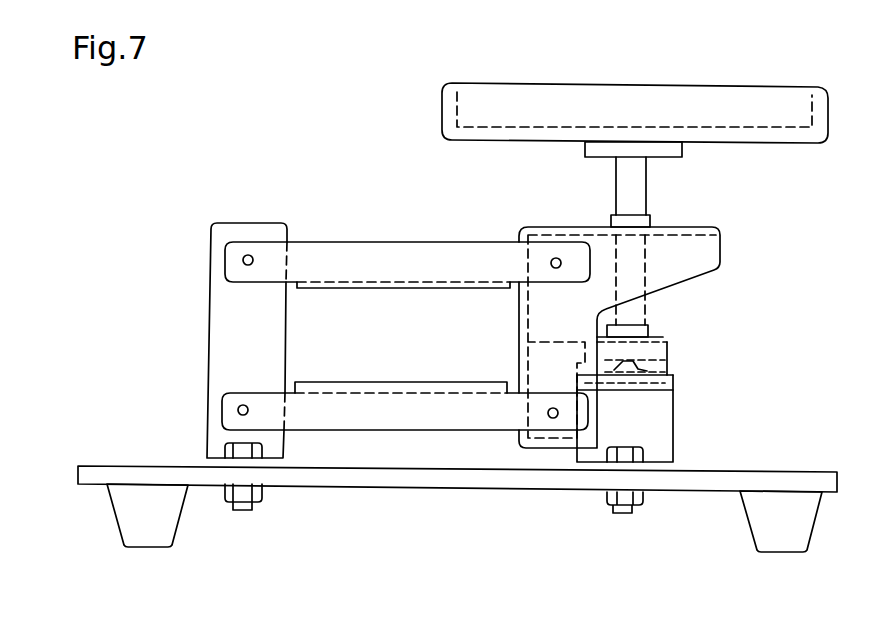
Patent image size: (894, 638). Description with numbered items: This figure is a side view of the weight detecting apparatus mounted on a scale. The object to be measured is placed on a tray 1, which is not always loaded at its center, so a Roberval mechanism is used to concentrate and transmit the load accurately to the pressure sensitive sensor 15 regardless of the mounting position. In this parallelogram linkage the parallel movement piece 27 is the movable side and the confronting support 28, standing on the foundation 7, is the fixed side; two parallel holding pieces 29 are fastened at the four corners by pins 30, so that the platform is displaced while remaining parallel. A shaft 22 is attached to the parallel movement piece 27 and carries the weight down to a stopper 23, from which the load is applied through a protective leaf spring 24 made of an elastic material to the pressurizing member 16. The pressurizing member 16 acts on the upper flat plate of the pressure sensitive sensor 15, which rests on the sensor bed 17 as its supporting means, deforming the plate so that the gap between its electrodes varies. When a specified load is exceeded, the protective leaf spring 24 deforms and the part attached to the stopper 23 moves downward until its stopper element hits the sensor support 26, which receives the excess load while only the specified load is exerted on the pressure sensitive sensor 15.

The tray 1 is at (822, 110).
The foundation 7 is at (480, 480).
The pressure sensitive sensor 15 is at (672, 379).
The pressurizing member 16 is at (668, 365).
The sensor bed 17 is at (673, 393).
The shaft 22 is at (635, 308).
The stopper 23 is at (666, 339).
The protective leaf spring 24 is at (668, 355).
The sensor support 26 is at (663, 425).
The parallel movement piece 27 is at (705, 247).
The support 28 is at (220, 323).
The parallel holding pieces 29 is at (402, 402).
The pins 30 is at (550, 408).